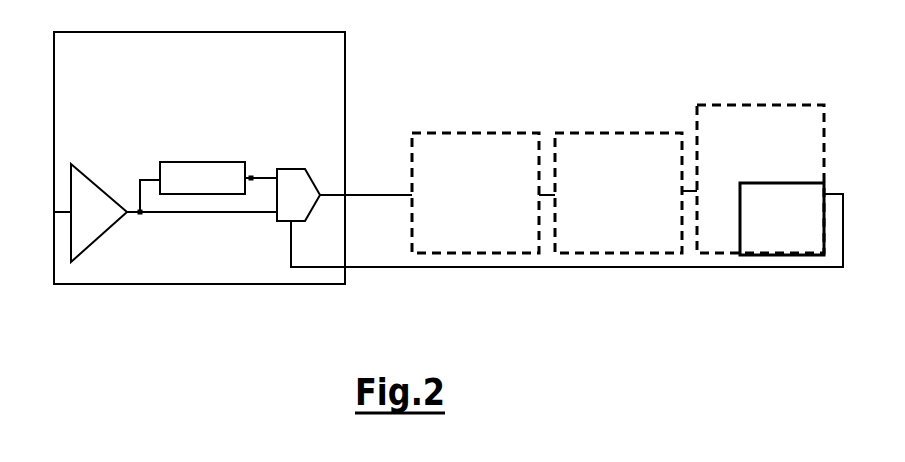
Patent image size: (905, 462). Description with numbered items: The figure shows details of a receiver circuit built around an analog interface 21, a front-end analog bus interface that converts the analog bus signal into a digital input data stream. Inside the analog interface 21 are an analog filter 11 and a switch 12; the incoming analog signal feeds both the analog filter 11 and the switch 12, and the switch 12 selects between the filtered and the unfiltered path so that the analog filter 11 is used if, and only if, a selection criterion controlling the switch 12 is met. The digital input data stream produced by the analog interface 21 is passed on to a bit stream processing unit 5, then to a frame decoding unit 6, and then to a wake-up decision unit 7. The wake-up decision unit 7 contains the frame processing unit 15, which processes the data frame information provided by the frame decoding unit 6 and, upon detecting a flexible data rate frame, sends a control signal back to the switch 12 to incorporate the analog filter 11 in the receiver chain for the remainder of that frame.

The analog interface 21 is at (213, 82).
The analog filter 11 is at (197, 195).
The switch 12 is at (278, 228).
The bit stream processing unit 5 is at (483, 212).
The frame decoding unit 6 is at (626, 212).
The wake-up decision unit 7 is at (769, 177).
The frame processing unit 15 is at (798, 236).